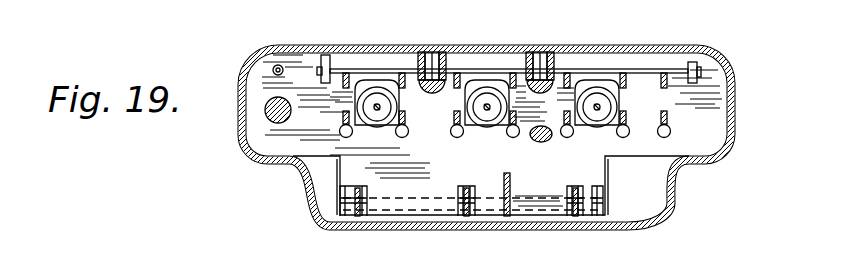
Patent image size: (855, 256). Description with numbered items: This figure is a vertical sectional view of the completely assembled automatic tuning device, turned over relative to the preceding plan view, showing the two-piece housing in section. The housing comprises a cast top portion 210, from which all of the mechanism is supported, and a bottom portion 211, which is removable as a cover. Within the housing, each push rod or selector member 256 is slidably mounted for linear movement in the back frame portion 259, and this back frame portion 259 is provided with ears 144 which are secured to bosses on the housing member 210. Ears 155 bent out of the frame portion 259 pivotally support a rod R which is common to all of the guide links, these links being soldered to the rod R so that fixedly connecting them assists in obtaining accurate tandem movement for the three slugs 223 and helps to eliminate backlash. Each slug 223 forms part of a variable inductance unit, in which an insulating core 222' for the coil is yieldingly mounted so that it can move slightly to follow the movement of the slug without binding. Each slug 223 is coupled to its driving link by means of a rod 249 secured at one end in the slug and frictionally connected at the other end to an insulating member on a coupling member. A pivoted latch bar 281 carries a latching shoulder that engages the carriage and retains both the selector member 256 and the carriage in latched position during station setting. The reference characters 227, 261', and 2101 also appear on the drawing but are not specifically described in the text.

The top portion 210 is at (498, 48).
The bottom portion 211 is at (679, 196).
The latch bar 281 is at (513, 75).
The rail end bracket 2101 is at (694, 80).
The ears 144 is at (445, 76).
The first knob dial 227 is at (374, 84).
The rod 249 is at (487, 110).
The slug 223 is at (598, 110).
The selector member 256 is at (449, 108).
The end terminal post 261' is at (691, 109).
The insulating core 222' is at (542, 151).
The back frame portion 259 is at (312, 132).
The ears 155 is at (340, 195).
The rod R is at (348, 207).